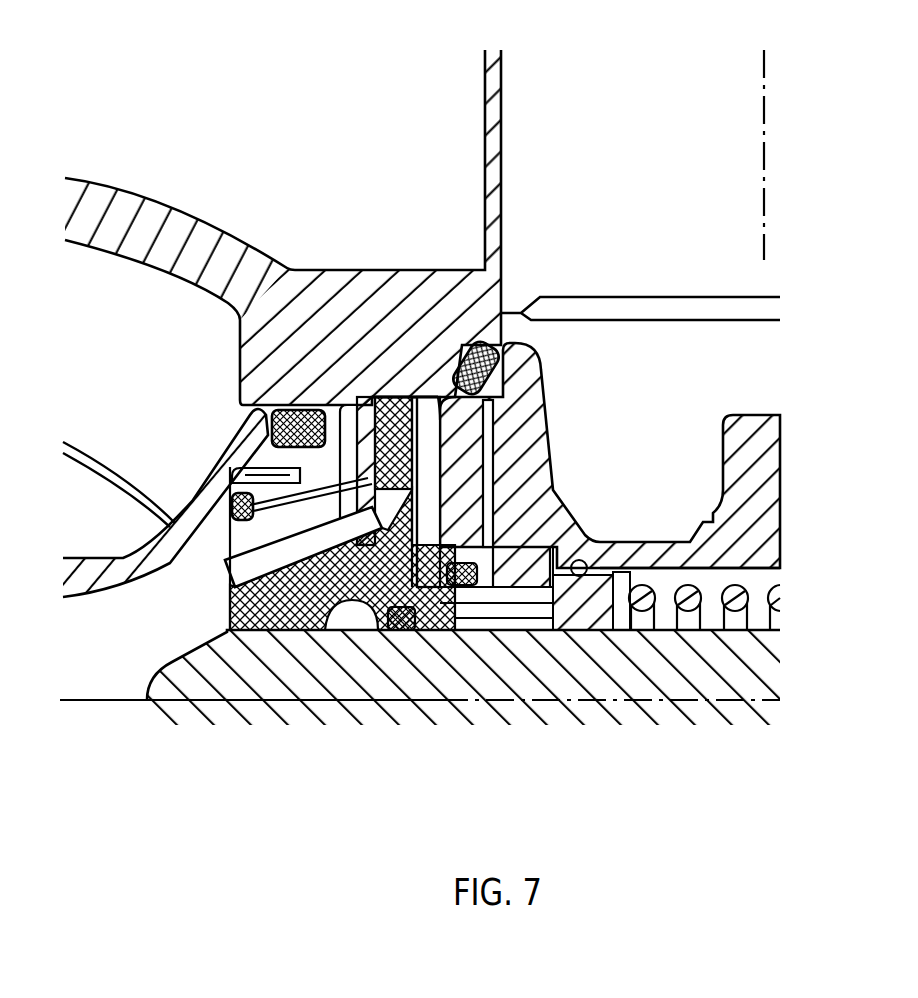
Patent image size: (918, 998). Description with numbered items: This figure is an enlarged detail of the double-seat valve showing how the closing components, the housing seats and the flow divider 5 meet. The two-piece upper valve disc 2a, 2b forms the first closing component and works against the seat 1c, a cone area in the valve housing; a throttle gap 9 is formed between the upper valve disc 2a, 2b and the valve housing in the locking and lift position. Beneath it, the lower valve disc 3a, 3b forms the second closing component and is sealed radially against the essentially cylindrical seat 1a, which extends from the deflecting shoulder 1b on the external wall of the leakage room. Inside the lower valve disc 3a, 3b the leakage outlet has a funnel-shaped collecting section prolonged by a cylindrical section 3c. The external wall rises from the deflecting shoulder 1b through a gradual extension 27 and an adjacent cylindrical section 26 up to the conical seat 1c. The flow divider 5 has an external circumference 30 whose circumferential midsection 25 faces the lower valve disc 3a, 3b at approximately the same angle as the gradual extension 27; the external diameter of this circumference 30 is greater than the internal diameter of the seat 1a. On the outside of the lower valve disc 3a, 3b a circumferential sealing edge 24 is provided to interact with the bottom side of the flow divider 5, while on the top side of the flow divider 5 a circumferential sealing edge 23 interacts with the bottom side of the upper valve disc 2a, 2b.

The essentially cylindrical seat 1a is at (300, 420).
The deflecting shoulder 1b is at (375, 395).
The seat 1c is at (442, 345).
The upper valve disc 2a is at (554, 488).
The upper valve disc 2b is at (503, 430).
The lower valve disc 3a is at (354, 393).
The lower valve disc 3b is at (225, 440).
The cylindrical section 3c is at (268, 500).
The flow divider 5 is at (445, 550).
The throttle gap 9 is at (478, 346).
The circumferential sealing edge 23 is at (417, 413).
The circumferential sealing edge 24 is at (345, 405).
The circumferential midsection 25 is at (412, 388).
The cylindrical section 26 is at (441, 398).
The gradual extension 27 is at (377, 388).
The external circumference 30 is at (415, 398).